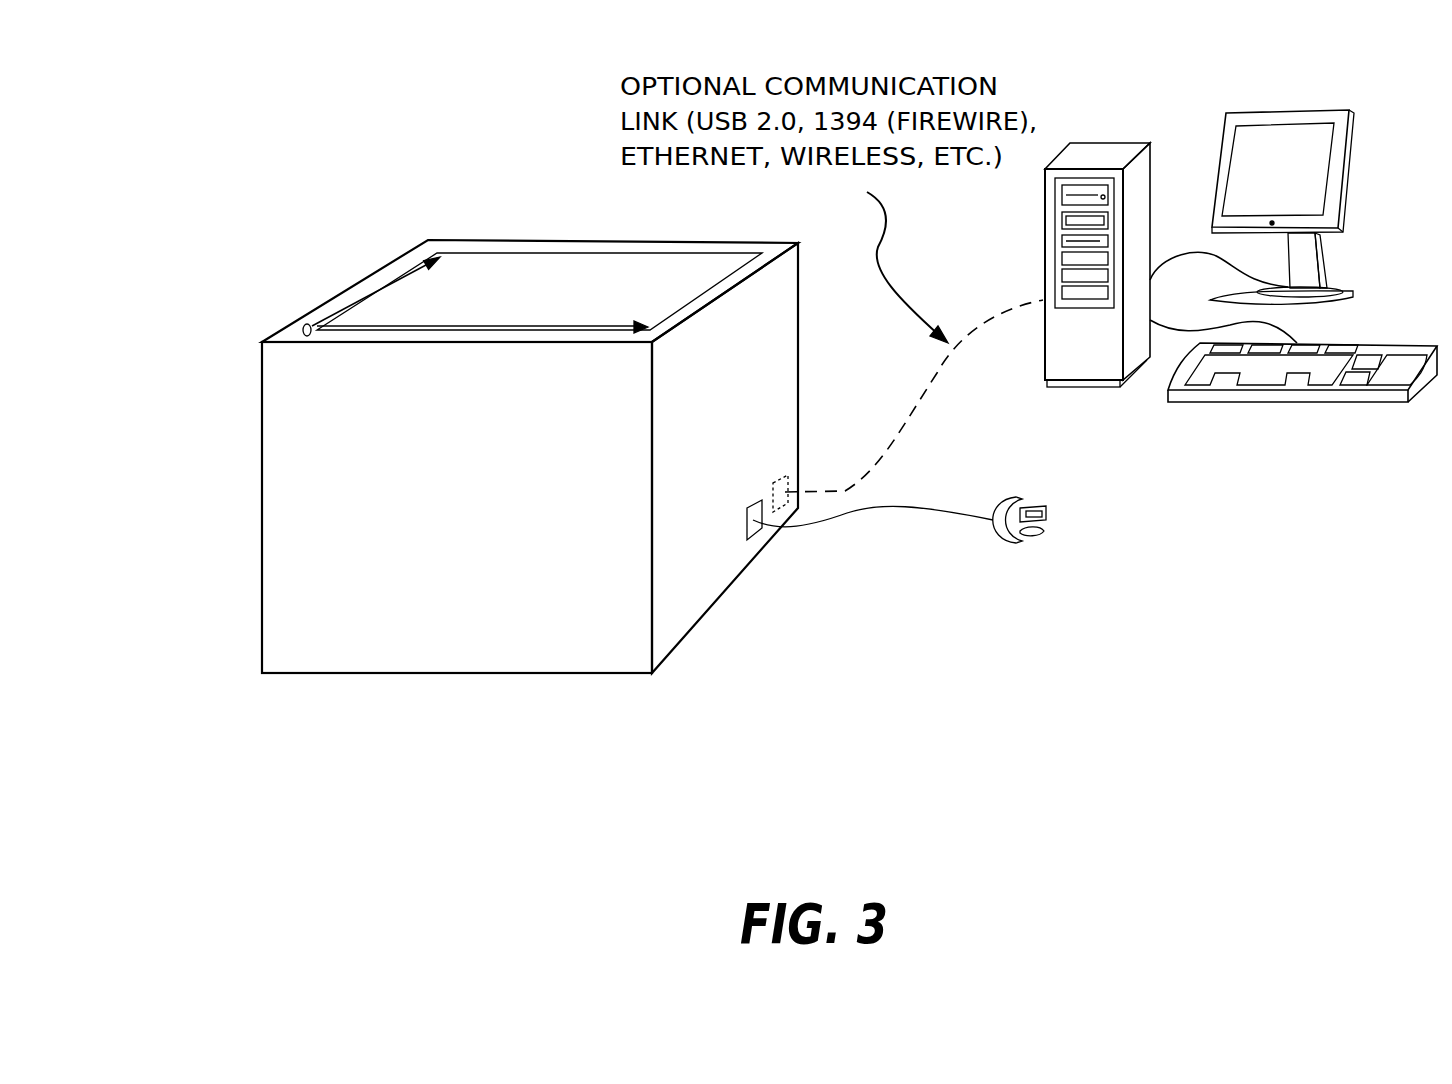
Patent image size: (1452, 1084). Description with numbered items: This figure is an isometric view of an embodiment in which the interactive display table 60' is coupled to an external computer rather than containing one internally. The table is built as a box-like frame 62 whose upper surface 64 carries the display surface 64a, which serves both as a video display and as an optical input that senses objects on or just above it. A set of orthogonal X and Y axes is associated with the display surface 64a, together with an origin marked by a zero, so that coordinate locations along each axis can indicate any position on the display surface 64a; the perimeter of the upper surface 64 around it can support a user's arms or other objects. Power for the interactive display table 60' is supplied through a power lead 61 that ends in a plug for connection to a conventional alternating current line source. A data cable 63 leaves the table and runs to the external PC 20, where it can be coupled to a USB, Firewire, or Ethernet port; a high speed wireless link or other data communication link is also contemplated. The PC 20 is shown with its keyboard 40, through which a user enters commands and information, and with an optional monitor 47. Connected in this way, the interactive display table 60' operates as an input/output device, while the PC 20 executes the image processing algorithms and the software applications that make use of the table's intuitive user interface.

The PC 20 is at (1110, 142).
The keyboard 40 is at (1395, 343).
The monitor 47 is at (1350, 167).
The interactive display table 60' is at (604, 394).
The power lead 61 is at (913, 508).
The frame 62 is at (262, 462).
The data cable 63 is at (932, 387).
The upper surface 64 is at (430, 256).
The display surface 64a is at (559, 302).